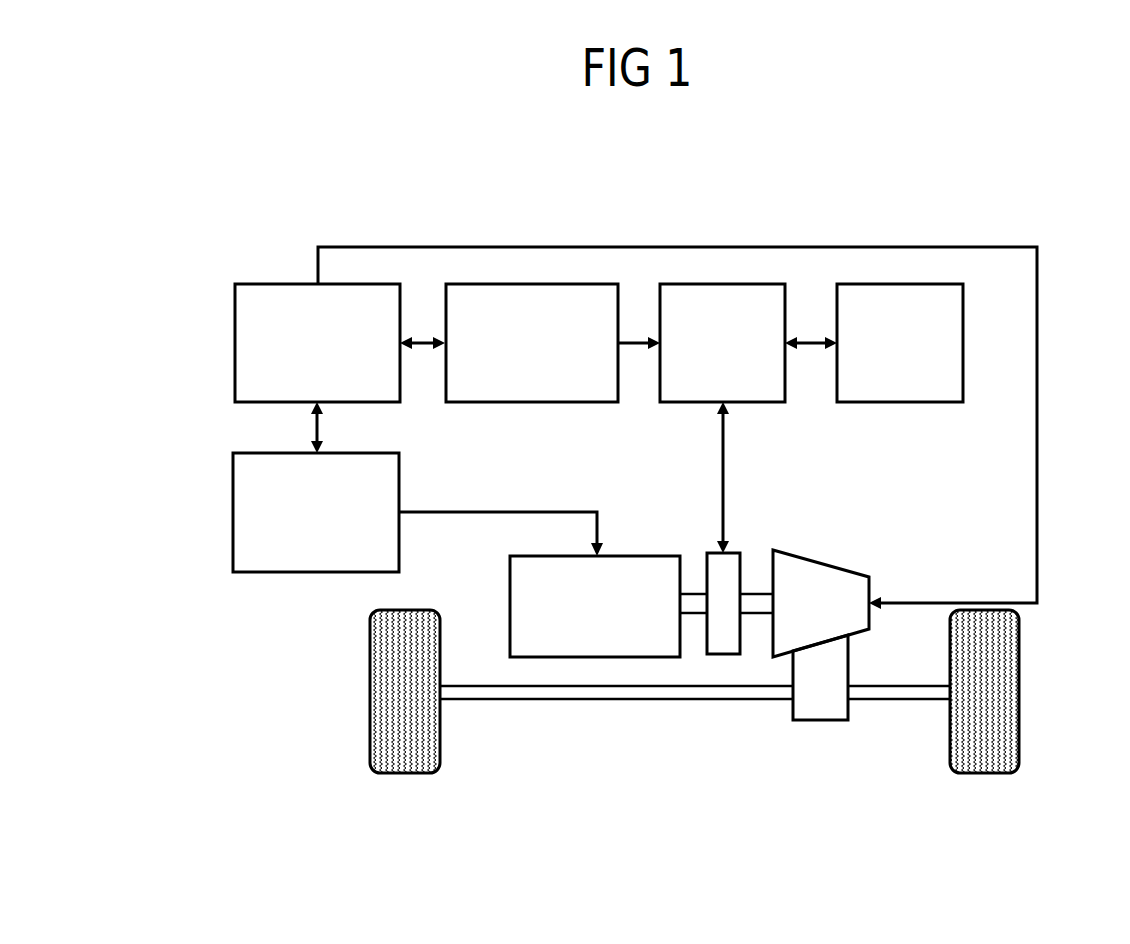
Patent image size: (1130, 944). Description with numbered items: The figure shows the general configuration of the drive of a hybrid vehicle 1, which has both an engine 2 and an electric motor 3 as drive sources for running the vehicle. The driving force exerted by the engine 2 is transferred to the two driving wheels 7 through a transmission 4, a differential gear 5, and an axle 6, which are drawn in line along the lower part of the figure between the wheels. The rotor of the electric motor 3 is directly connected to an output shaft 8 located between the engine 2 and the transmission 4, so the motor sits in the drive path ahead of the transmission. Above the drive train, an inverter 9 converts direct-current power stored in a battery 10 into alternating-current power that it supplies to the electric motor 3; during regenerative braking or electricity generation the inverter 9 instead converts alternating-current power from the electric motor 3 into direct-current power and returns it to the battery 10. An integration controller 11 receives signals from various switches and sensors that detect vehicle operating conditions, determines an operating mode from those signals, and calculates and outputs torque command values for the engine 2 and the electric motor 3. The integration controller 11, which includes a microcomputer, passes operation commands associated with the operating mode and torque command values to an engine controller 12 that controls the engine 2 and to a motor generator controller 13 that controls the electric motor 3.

The hybrid vehicle 1 is at (1082, 250).
The engine 2 is at (522, 605).
The electric motor 3 is at (732, 568).
The transmission 4 is at (843, 577).
The differential gear 5 is at (824, 716).
The axle 6 is at (667, 695).
The driving wheels 7 is at (395, 777).
The output shaft 8 is at (693, 602).
The inverter 9 is at (713, 295).
The battery 10 is at (893, 293).
The integration controller 11 is at (260, 292).
The engine controller 12 is at (242, 489).
The motor generator controller 13 is at (520, 288).